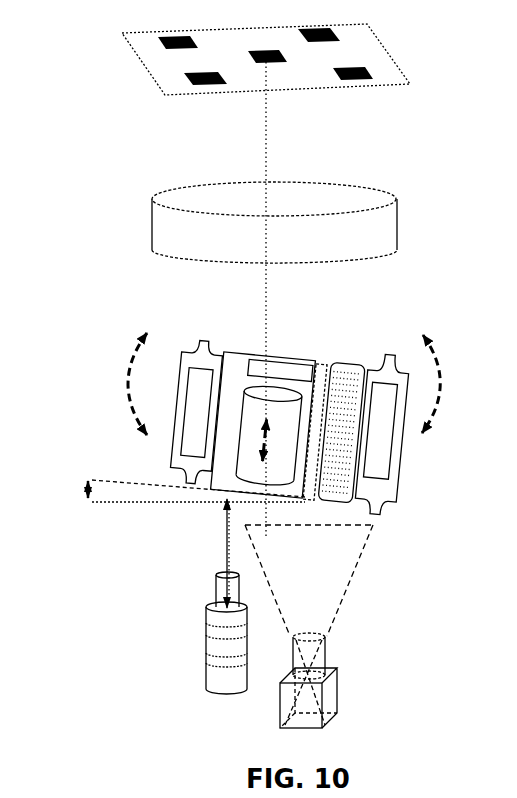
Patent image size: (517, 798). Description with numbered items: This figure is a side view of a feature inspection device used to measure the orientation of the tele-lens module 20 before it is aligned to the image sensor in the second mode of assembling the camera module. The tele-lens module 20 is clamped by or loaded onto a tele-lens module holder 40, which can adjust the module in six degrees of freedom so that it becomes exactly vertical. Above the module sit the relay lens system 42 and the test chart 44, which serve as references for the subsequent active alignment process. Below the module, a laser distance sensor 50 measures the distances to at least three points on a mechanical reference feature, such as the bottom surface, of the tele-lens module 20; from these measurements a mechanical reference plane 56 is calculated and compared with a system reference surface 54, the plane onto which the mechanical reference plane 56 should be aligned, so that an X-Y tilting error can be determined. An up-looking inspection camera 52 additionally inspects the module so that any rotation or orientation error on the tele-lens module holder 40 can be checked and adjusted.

The test chart 44 is at (367, 53).
The relay lens system 42 is at (368, 223).
The tele-lens module 20 is at (317, 360).
The tele-lens module holder 40 is at (378, 462).
The mechanical reference plane 56 is at (118, 478).
The system reference surface 54 is at (112, 507).
The laser distance sensor 50 is at (202, 640).
The up-looking inspection camera 52 is at (337, 697).